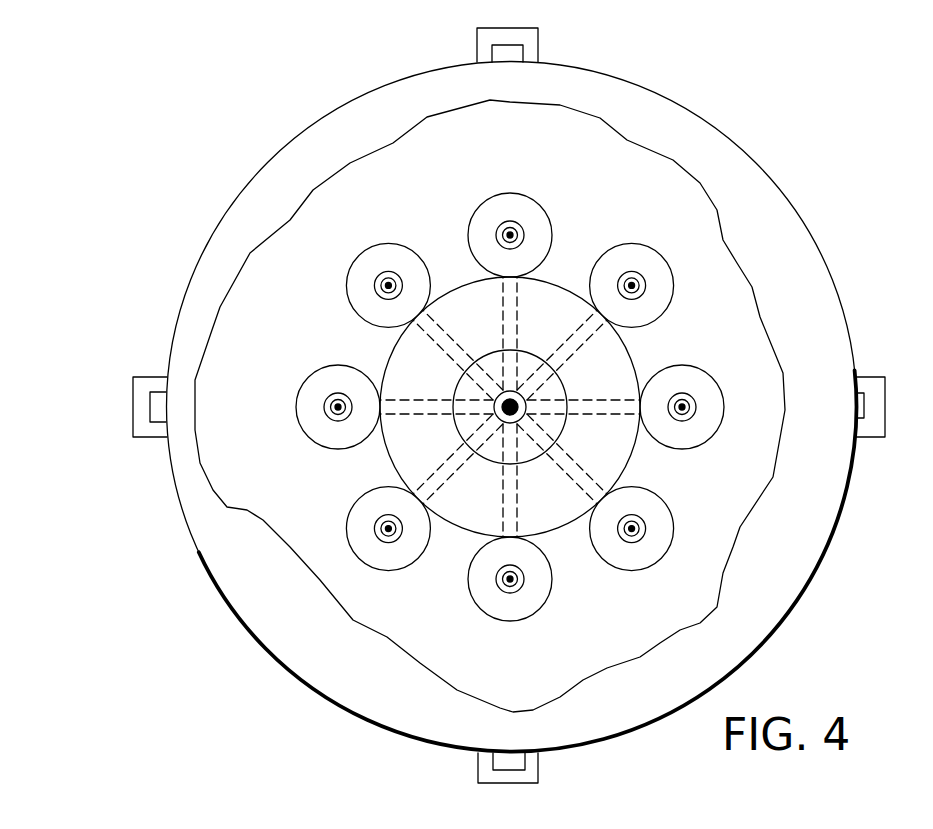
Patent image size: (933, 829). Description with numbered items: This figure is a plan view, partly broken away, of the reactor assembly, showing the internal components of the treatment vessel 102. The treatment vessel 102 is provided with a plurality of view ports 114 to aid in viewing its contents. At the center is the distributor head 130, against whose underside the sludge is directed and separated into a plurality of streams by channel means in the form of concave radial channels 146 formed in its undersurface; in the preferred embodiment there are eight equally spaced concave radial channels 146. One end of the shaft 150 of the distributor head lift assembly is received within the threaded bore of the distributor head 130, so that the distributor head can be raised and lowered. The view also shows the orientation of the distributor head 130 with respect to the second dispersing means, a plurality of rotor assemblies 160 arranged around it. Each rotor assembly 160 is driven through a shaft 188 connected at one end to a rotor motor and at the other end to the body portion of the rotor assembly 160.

The treatment vessel 102 is at (812, 540).
The view ports 114 is at (538, 47).
The distributor head 130 is at (636, 356).
The concave radial channels 146 is at (563, 343).
The shaft 150 is at (517, 412).
The rotor assemblies 160 is at (462, 224).
The shaft 188 is at (514, 230).